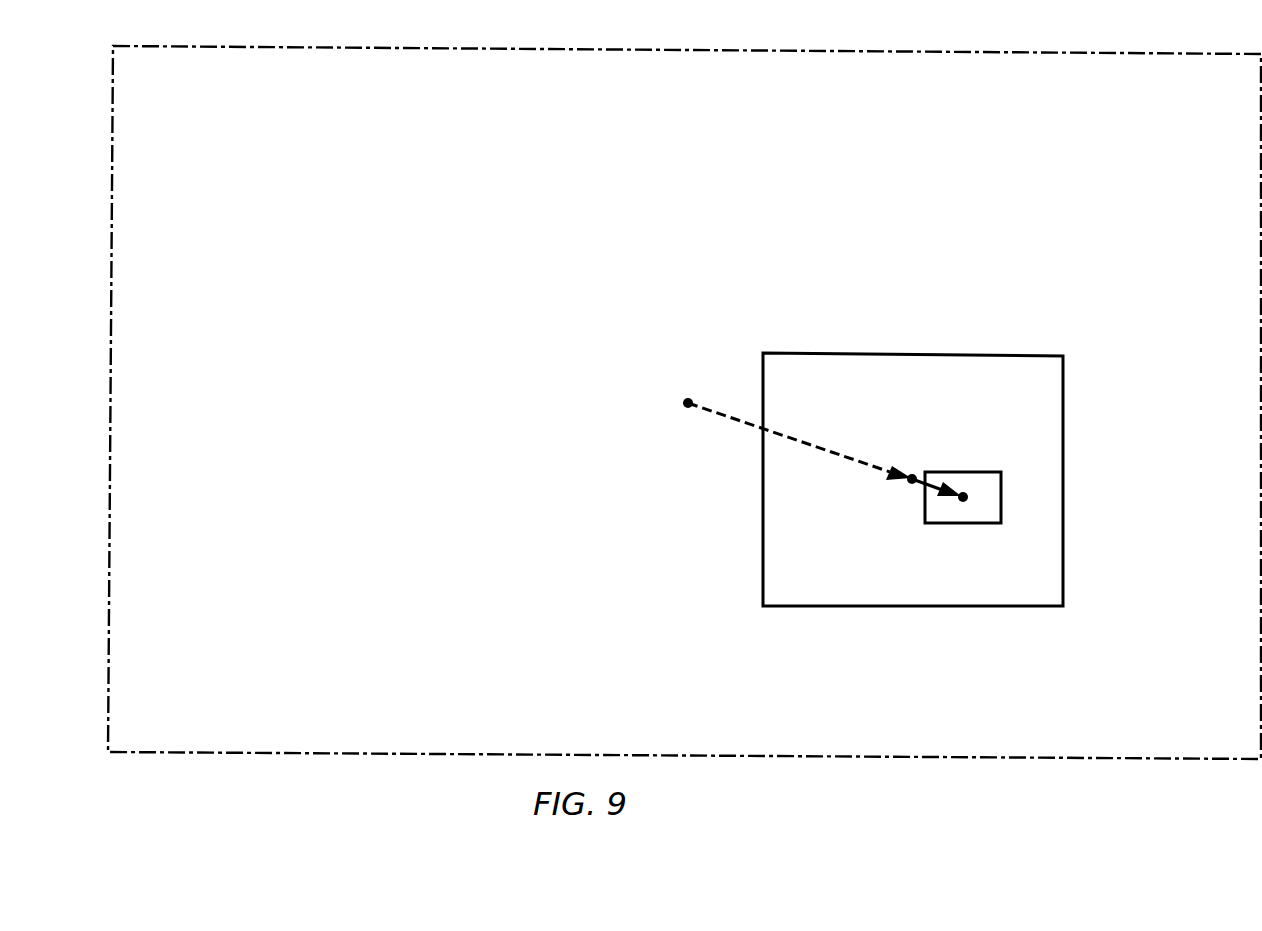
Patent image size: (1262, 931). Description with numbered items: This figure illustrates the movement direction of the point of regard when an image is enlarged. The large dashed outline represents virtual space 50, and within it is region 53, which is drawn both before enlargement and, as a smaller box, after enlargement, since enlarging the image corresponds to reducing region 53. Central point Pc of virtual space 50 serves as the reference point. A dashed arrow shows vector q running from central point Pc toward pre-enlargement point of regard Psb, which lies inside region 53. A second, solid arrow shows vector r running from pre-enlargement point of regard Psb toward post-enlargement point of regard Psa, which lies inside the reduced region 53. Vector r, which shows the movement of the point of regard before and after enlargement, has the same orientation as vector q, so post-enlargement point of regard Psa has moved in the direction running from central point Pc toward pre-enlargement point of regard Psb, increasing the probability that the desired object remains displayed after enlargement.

The virtual space 50 is at (930, 759).
The region 53 is at (965, 354).
The central point of virtual space Pc is at (686, 408).
The post-enlargement point of regard Psa is at (965, 490).
The pre-enlargement point of regard Psb is at (910, 484).
The vector from reference point toward point of regard q is at (735, 419).
The vector showing movement of point of regard r is at (937, 494).